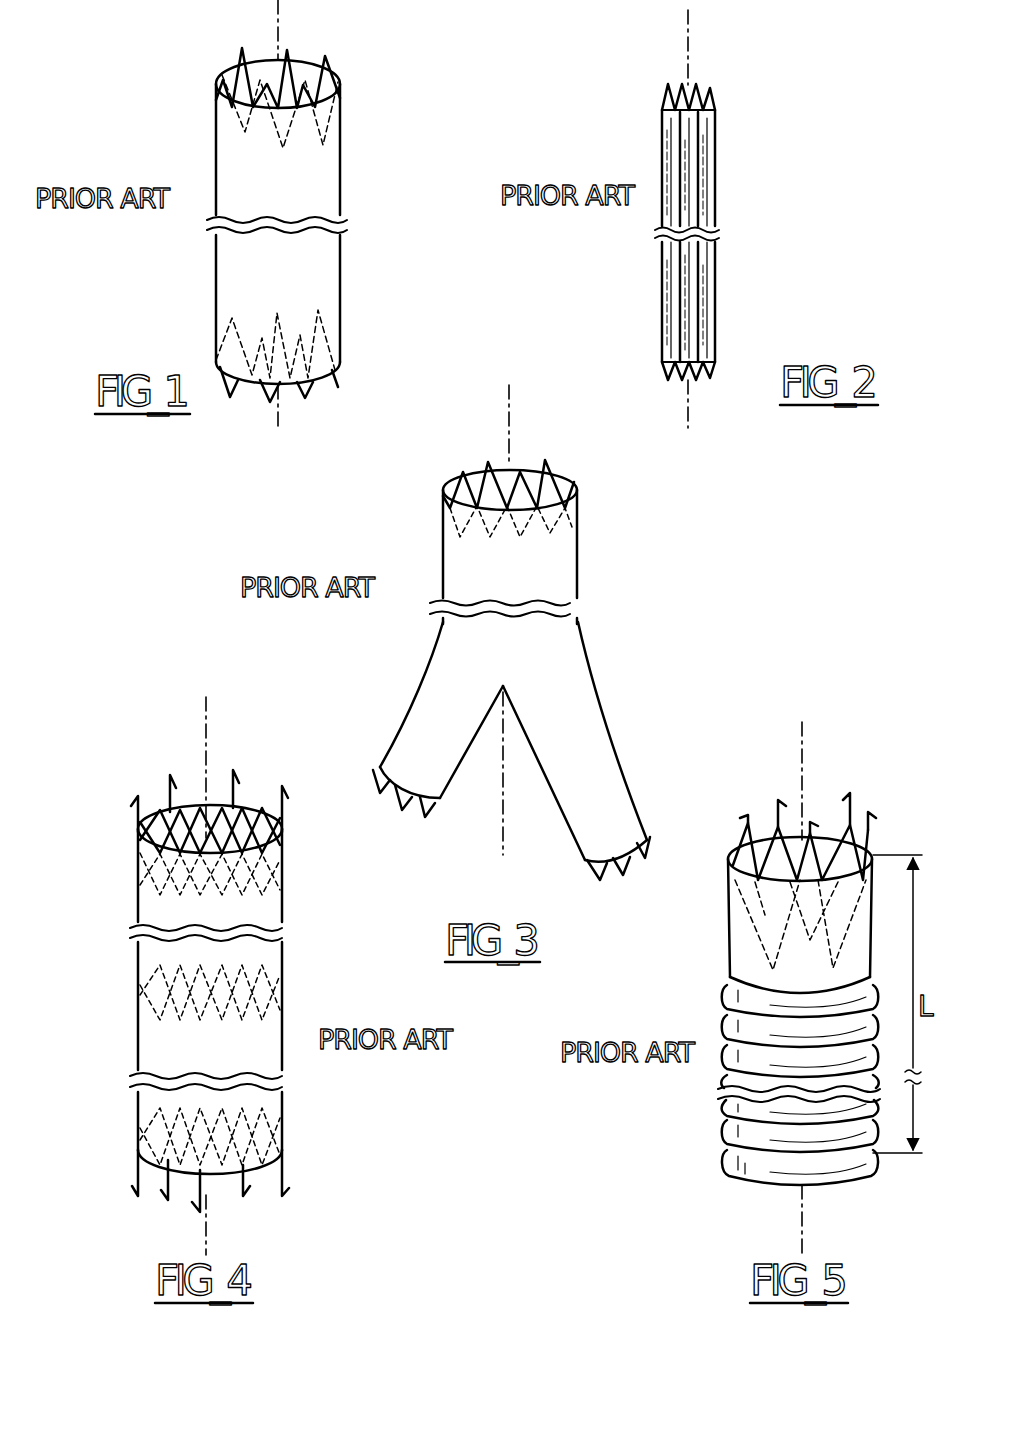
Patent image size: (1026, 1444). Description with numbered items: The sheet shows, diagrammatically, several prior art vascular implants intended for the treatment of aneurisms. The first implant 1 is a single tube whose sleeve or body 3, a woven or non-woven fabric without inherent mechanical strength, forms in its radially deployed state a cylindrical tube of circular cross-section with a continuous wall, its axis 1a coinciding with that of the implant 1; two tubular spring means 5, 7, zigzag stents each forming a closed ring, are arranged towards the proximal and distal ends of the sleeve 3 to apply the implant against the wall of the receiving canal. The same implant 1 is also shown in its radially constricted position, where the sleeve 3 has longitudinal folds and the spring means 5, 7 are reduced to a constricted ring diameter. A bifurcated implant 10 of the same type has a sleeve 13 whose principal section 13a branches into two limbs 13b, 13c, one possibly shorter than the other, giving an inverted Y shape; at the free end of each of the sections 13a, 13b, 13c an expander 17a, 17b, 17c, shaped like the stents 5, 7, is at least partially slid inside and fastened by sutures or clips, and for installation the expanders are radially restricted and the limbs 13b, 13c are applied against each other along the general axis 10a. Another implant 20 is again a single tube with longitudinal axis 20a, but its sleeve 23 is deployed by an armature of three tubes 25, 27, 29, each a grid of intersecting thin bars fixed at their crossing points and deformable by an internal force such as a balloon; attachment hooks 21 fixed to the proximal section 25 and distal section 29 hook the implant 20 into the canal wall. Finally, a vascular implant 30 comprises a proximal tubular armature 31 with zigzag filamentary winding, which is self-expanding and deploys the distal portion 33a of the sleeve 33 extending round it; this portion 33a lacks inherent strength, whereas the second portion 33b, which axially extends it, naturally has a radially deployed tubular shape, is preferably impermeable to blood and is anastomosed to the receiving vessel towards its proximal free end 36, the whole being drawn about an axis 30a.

In FIG. 1, the implant 1 is at (207, 296).
In FIG. 2, the implant 1 is at (722, 332).
In FIG. 1, the axis 1a is at (279, 12).
In FIG. 2, the axis 1a is at (689, 28).
In FIG. 1, the sleeve 3 is at (325, 255).
In FIG. 2, the sleeve 3 is at (706, 176).
In FIG. 1, the tubular spring means 5 is at (305, 388).
In FIG. 2, the tubular spring means 5 is at (666, 378).
In FIG. 1, the tubular spring means 7 is at (340, 63).
In FIG. 2, the tubular spring means 7 is at (665, 94).
In FIG. 3, the implant 10 is at (600, 642).
In FIG. 3, the general axis 10a is at (503, 802).
In FIG. 3, the sleeve 13 is at (466, 586).
In FIG. 3, the principal section 13a is at (555, 552).
In FIG. 3, the limb 13b is at (420, 700).
In FIG. 3, the limb 13c is at (603, 775).
In FIG. 3, the expander 17a is at (572, 481).
In FIG. 3, the expander 17b is at (380, 784).
In FIG. 3, the expander 17c is at (596, 872).
In FIG. 4, the implant 20 is at (287, 1026).
In FIG. 4, the longitudinal axis 20a is at (207, 722).
In FIG. 4, the attachment hooks 21 is at (172, 778).
In FIG. 5, the attachment hooks 21 is at (855, 800).
In FIG. 4, the sleeve 23 is at (270, 945).
In FIG. 4, the proximal section 25 is at (274, 1127).
In FIG. 4, the tube 27 is at (140, 1003).
In FIG. 4, the distal section 29 is at (138, 886).
In FIG. 5, the vascular implant 30 is at (822, 1188).
In FIG. 5, the longitudinal axis 30a is at (803, 745).
In FIG. 5, the proximal tubular armature 31 is at (752, 828).
In FIG. 5, the sleeve 33 is at (762, 1081).
In FIG. 5, the distal portion 33a is at (728, 950).
In FIG. 5, the second portion 33b is at (748, 1115).
In FIG. 5, the proximal free end 36 is at (748, 1163).